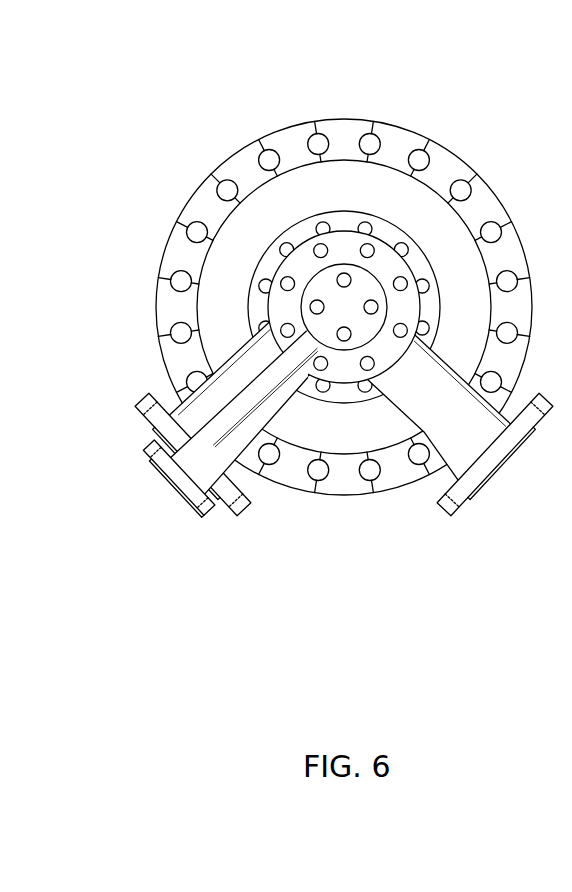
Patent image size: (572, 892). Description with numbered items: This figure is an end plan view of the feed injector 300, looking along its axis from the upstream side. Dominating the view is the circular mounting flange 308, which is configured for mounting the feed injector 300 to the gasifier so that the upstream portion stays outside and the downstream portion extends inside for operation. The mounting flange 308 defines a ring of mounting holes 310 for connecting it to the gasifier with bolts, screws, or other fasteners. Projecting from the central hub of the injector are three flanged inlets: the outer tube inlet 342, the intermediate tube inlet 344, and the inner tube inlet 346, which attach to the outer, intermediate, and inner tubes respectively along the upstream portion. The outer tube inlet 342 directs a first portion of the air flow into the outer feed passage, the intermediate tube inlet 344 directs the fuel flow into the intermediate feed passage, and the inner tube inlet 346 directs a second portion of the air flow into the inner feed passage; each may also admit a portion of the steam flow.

The feed injector 300 is at (318, 276).
The mounting flange 308 is at (245, 148).
The mounting holes 310 is at (190, 212).
The outer tube inlet 342 is at (152, 428).
The intermediate tube inlet 344 is at (488, 499).
The inner tube inlet 346 is at (150, 486).